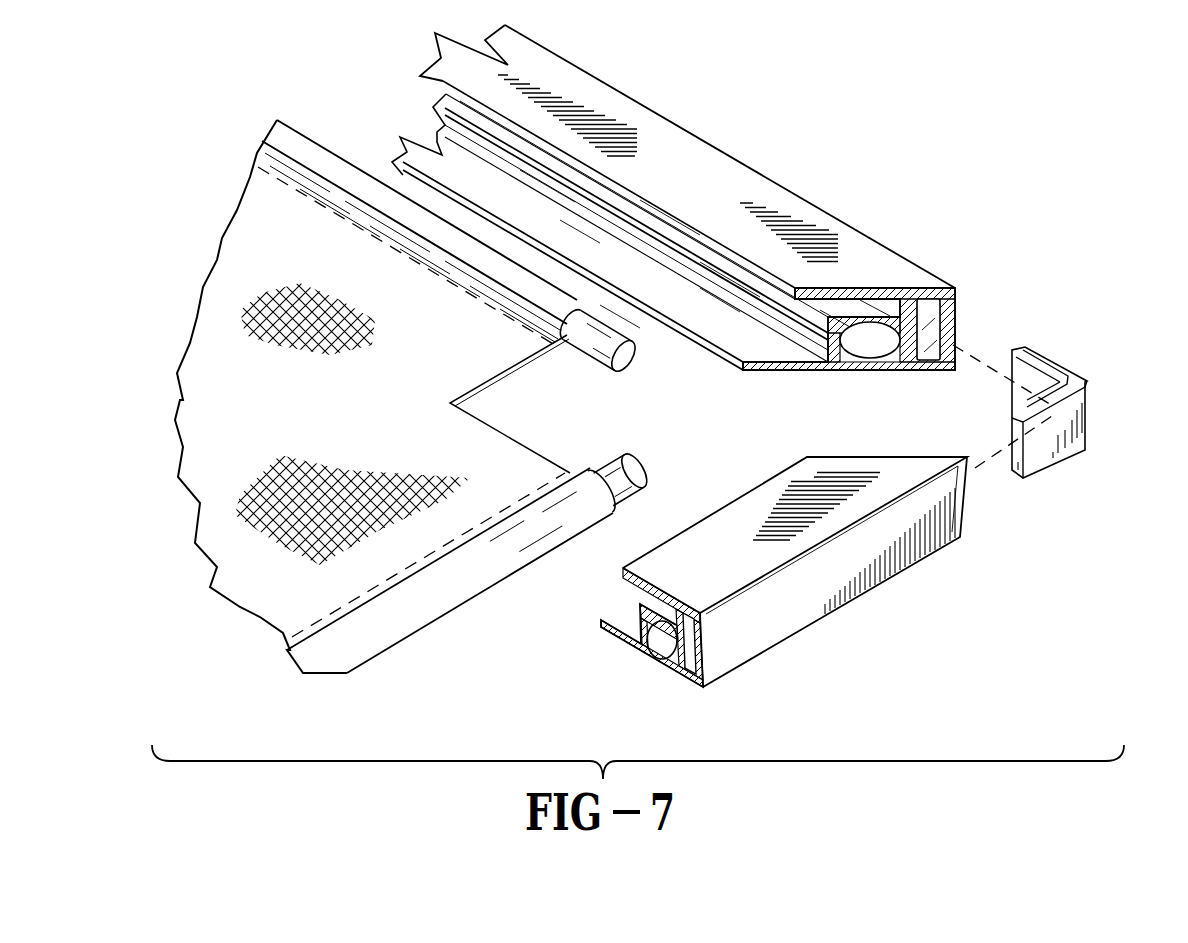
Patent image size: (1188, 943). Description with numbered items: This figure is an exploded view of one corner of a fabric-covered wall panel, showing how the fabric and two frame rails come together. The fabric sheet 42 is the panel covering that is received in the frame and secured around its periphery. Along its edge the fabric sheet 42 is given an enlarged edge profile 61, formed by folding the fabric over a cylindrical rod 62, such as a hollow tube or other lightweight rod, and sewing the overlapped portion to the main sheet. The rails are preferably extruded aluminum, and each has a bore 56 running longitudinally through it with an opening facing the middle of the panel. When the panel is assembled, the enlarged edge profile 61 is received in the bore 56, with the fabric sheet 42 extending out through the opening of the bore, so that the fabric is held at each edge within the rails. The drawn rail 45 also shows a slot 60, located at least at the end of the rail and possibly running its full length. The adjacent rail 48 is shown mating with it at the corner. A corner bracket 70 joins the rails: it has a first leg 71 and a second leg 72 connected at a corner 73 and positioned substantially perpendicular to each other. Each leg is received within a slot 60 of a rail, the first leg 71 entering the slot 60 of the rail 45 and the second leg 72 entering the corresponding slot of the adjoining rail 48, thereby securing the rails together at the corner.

The fabric sheet 42 is at (485, 447).
The bottom rail 45 is at (700, 175).
The lower frame channel member 48 is at (738, 653).
The bore 56 is at (869, 344).
The slot 60 is at (938, 322).
The enlarged edge profile 61 is at (398, 650).
The cylindrical rod 62 is at (626, 356).
The corner bracket 70 is at (1059, 440).
The first leg 71 is at (1040, 357).
The second leg 72 is at (1020, 468).
The corner 73 is at (1087, 418).